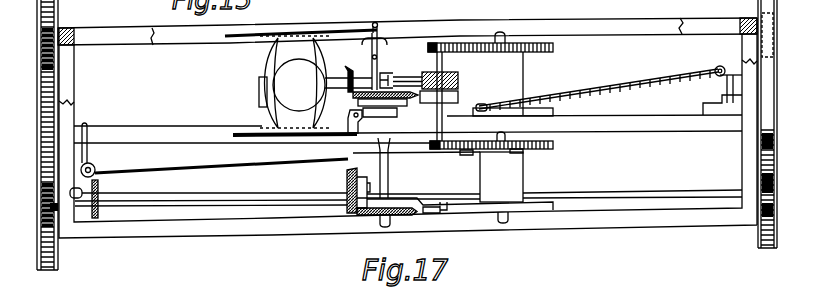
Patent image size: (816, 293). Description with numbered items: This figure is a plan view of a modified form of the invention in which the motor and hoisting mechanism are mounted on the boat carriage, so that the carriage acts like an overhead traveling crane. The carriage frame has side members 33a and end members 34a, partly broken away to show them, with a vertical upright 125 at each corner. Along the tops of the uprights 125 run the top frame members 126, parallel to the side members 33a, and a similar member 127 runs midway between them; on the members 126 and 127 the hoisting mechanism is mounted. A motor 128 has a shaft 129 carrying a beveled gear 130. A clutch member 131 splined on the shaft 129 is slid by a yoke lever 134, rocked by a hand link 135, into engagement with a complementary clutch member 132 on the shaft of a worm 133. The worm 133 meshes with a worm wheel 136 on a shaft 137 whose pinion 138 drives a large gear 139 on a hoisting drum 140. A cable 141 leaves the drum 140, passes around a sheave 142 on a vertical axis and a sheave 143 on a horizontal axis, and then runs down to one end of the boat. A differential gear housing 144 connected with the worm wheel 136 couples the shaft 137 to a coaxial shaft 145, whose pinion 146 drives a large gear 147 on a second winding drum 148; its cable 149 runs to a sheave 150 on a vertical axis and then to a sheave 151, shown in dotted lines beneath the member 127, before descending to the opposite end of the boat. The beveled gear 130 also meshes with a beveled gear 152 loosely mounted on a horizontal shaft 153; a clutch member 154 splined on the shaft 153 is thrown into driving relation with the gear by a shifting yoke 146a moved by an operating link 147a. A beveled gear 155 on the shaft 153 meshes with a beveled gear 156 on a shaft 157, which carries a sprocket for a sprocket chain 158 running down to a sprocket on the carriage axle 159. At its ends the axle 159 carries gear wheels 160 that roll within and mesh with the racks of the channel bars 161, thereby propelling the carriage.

The vertical upright 125 is at (73, 33).
The top frame member 126 is at (566, 30).
The top frame member 127 is at (648, 124).
The motor 128 is at (263, 93).
The motor shaft 129 is at (330, 84).
The beveled gear 130 is at (346, 70).
The clutch member 131 is at (372, 70).
The clutch member 132 is at (387, 74).
The worm 133 is at (460, 79).
The yoke lever 134 is at (380, 42).
The link 135 is at (295, 33).
The worm wheel 136 is at (452, 68).
The shaft 137 is at (438, 66).
The pinion 138 is at (430, 43).
The large gear 139 is at (553, 48).
The hoisting drum 140 is at (523, 78).
The cable 141 is at (594, 88).
The sheave 142 is at (714, 75).
The sheave 143 is at (722, 96).
The differential gear housing 144 is at (450, 95).
The coaxial shaft 145 is at (443, 127).
The pinion 146 is at (430, 145).
The shifting yoke 146a is at (360, 115).
The large gear 147 is at (553, 145).
The operating link 147a is at (312, 140).
The second winding drum 148 is at (510, 175).
The cable 149 is at (313, 163).
The sheave 150 is at (94, 167).
The sheave 151 is at (86, 134).
The beveled gear 152 is at (353, 97).
The horizontal shaft 153 is at (363, 102).
The clutch member 154 is at (402, 107).
The beveled gear 155 is at (412, 213).
The beveled gear 156 is at (347, 175).
The shaft 157 is at (267, 192).
The sprocket chain 158 is at (99, 183).
The axle 159 is at (582, 198).
The gear wheel 160 is at (53, 207).
The channel bar 161 is at (53, 257).
The side member 33a is at (138, 34).
The end member 34a is at (67, 87).